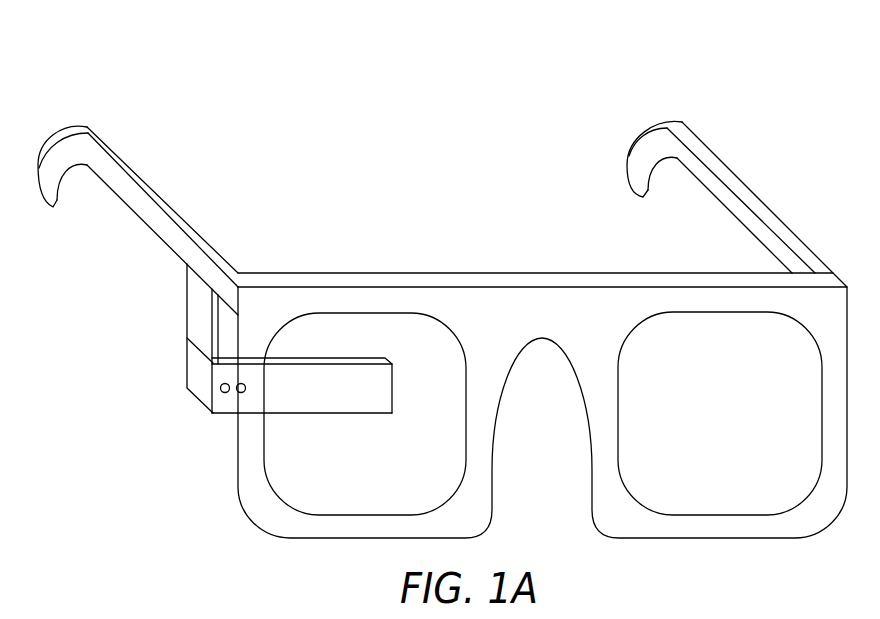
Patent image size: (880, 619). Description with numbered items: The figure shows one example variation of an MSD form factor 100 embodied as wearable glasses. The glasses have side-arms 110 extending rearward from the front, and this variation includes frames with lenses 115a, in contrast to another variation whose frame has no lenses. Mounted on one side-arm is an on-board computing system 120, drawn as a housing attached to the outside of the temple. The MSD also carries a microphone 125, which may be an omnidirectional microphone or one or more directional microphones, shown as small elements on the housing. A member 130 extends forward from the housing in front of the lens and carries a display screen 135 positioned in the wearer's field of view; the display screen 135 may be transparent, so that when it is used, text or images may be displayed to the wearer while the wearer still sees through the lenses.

The MSD form factor 100 is at (108, 54).
The side-arms 110 is at (226, 260).
The frames with lenses 115a is at (367, 273).
The on-board computing system 120 is at (188, 357).
The microphone 125 is at (225, 394).
The display arm 130 is at (242, 394).
The display screen 135 is at (280, 390).